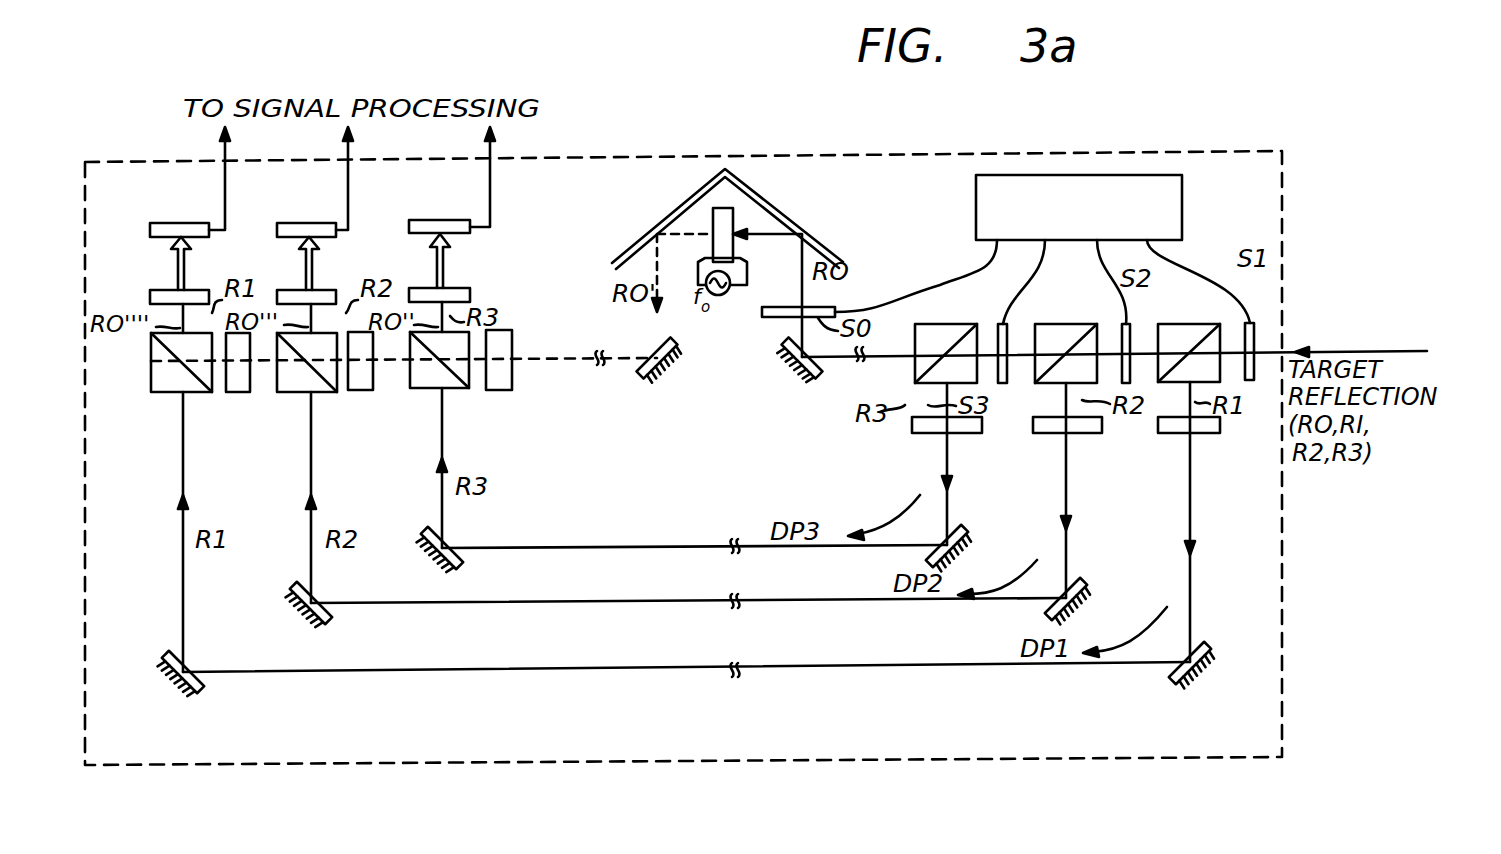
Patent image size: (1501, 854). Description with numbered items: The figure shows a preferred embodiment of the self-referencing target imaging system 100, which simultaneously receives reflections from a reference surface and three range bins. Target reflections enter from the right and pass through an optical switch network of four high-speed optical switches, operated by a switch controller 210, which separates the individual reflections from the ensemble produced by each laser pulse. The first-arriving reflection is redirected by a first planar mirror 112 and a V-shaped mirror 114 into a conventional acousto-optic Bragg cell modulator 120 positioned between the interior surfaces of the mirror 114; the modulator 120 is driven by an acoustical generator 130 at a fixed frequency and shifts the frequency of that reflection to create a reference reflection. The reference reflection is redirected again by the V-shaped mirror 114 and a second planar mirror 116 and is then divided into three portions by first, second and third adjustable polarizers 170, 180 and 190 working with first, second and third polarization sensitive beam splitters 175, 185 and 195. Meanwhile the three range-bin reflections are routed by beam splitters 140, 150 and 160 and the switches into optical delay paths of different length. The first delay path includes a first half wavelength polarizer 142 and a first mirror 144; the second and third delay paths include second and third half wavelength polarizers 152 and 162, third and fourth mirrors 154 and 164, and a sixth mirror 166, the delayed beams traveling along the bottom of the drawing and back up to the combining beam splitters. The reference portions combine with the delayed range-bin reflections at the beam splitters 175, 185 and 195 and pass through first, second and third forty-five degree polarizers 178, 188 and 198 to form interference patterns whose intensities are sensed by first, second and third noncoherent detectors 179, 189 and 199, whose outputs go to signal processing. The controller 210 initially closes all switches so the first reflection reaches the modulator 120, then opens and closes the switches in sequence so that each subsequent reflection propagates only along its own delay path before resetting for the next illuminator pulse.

The self-referencing target imaging system 100 is at (1185, 128).
The first planar mirror 112 is at (822, 373).
The V-shaped mirror 114 is at (833, 252).
The second planar mirror 116 is at (648, 366).
The acousto-optic Bragg cell modulator 120 is at (733, 212).
The acoustical generator 130 is at (736, 294).
The beam splitter 140 is at (1202, 300).
The first half wavelength polarizer 142 is at (1214, 433).
The first mirror 144 is at (1202, 655).
The beam splitter 150 is at (1068, 324).
The second half wavelength polarizer 152 is at (1087, 433).
The third mirror 154 is at (1078, 577).
The beam splitter 160 is at (949, 324).
The third half wavelength polarizer 162 is at (962, 433).
The fourth mirror 164 is at (960, 526).
The sixth mirror 166 is at (455, 560).
The first adjustable polarizer 170 is at (238, 392).
The first polarization sensitive beam splitter 175 is at (198, 392).
The first 45 degree polarizer 178 is at (190, 290).
The first noncoherent detector 179 is at (186, 223).
The second adjustable polarizer 180 is at (360, 390).
The second polarization sensitive beam splitter 185 is at (328, 392).
The second 45 degree polarizer 188 is at (320, 290).
The second noncoherent detector 189 is at (312, 223).
The third adjustable polarizer 190 is at (502, 390).
The third polarization sensitive beam splitter 195 is at (462, 388).
The third 45 degree polarizer 198 is at (476, 288).
The third noncoherent detector 199 is at (434, 220).
The switch controller 210 is at (1183, 217).